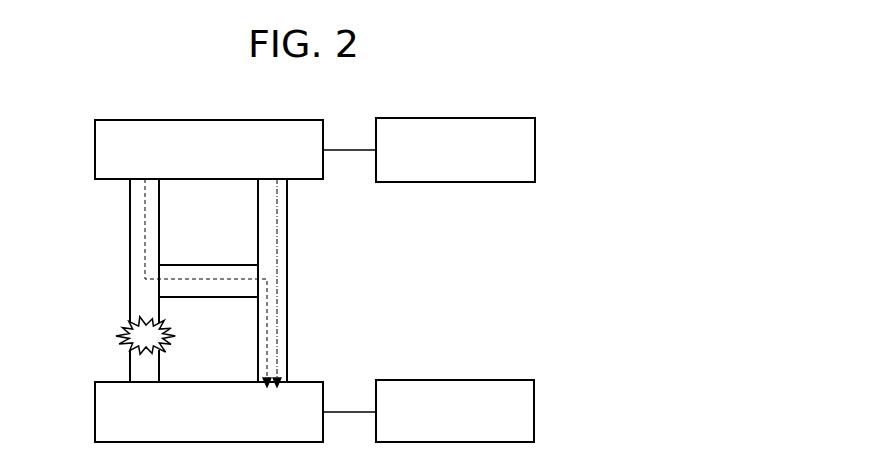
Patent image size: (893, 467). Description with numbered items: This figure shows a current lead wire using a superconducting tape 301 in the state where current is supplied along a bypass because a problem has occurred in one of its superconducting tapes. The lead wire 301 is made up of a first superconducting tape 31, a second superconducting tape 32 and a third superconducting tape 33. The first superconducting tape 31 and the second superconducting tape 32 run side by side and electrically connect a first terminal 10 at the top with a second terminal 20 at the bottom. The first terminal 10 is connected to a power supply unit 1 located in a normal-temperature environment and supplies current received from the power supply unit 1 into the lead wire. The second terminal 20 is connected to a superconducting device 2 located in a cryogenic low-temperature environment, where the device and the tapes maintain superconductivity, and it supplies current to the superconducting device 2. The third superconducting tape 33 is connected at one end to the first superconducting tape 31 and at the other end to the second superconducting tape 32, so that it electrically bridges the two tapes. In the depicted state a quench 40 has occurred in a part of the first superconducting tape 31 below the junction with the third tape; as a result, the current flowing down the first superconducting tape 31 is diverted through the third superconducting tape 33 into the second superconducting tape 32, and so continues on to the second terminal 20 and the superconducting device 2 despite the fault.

The power supply unit 1 is at (535, 118).
The superconducting device 2 is at (534, 380).
The first terminal 10 is at (95, 120).
The second terminal 20 is at (95, 382).
The current lead wire using a superconducting tape 301 is at (181, 283).
The first superconducting tape 31 is at (130, 222).
The second superconducting tape 32 is at (287, 223).
The third superconducting tape 33 is at (247, 272).
The quench 40 is at (120, 331).